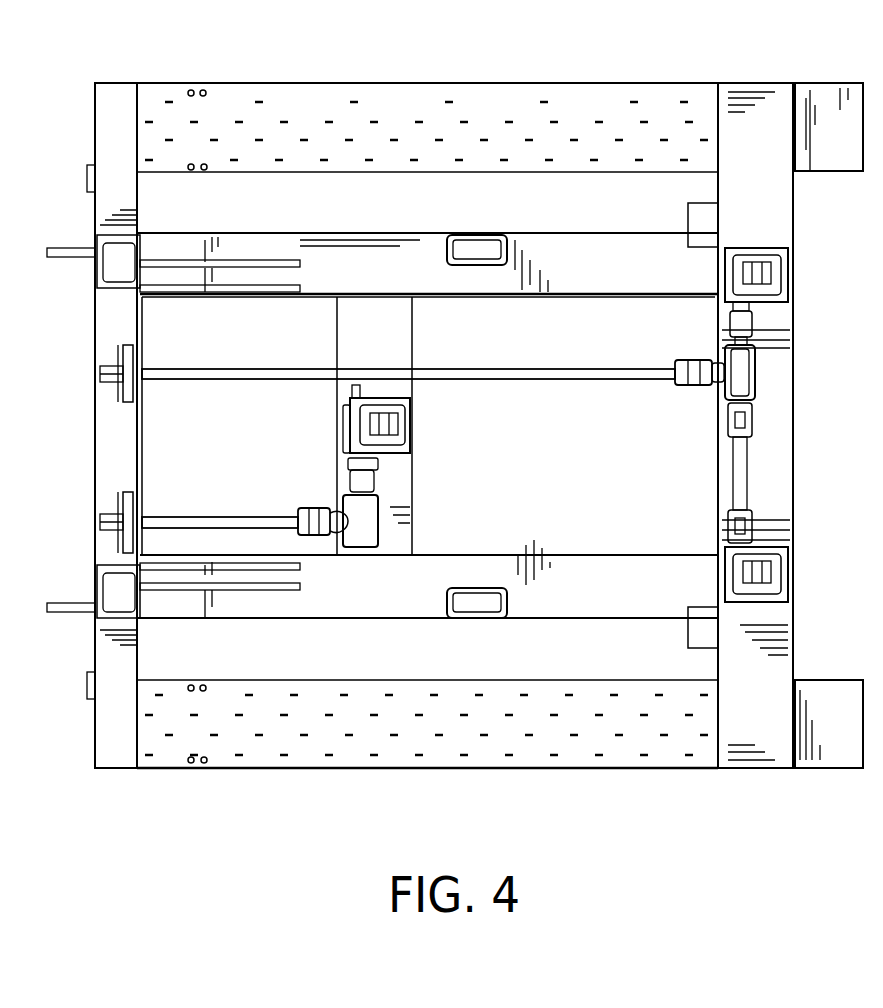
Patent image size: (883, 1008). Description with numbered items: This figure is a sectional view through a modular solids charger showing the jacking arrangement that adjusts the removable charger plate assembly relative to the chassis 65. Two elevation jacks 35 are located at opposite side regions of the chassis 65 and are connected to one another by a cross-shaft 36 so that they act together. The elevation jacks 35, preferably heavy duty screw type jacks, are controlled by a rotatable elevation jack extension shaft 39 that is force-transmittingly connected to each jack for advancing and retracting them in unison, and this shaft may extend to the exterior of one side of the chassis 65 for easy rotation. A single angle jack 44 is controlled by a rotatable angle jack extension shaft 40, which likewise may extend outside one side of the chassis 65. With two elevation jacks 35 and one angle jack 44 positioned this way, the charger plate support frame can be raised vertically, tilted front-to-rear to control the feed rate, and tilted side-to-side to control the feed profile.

The chassis 65 is at (762, 79).
The elevation jack 35 is at (790, 247).
The cross-shaft 36 is at (745, 458).
The rotatable elevation jack extension shaft 39 is at (203, 368).
The rotatable angle jack extension shaft 40 is at (228, 478).
The angle jack 44 is at (350, 418).